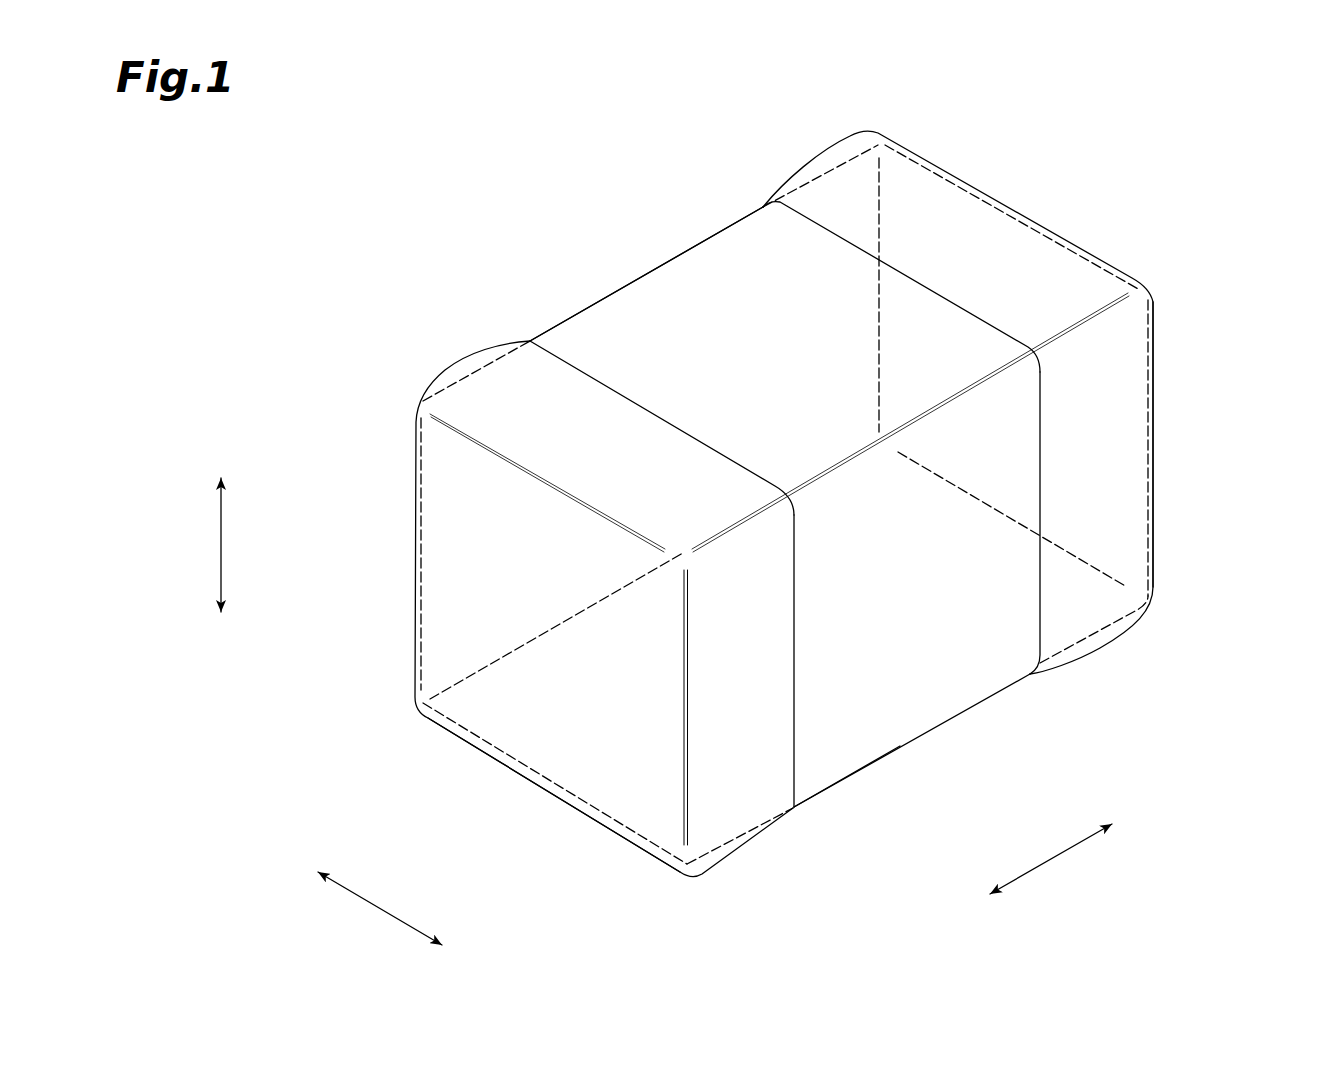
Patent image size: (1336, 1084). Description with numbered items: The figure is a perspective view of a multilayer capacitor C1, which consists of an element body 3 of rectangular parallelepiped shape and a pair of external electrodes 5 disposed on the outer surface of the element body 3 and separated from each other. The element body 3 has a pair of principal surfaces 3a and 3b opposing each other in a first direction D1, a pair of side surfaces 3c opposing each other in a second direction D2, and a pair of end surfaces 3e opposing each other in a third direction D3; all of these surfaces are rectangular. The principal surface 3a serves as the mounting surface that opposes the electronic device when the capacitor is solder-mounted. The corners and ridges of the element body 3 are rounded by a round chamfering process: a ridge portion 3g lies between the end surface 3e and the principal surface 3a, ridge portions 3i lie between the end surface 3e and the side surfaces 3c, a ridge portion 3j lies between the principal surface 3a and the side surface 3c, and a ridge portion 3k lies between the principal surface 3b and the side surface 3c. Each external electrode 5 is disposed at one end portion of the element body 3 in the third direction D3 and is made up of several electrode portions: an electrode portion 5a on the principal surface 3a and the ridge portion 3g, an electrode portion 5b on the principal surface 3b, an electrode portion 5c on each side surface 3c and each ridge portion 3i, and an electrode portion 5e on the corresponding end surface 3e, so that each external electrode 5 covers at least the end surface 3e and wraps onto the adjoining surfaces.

The multilayer capacitor C1 is at (1128, 177).
The element body 3 is at (640, 273).
The principal surface 3a is at (837, 693).
The principal surface 3b is at (740, 273).
The side surface 3c is at (623, 337).
The end surface 3e is at (543, 712).
The ridge portion 3g is at (560, 800).
The ridge portion 3i is at (882, 240).
The ridge portion 3j is at (895, 750).
The ridge portion 3k is at (610, 293).
The external electrode 5 is at (424, 395).
The electrode portion 5a is at (1127, 366).
The electrode portion 5b is at (663, 467).
The electrode portion 5c is at (753, 653).
The electrode portion 5e is at (640, 763).
The first direction D1 is at (221, 547).
The second direction D2 is at (400, 898).
The third direction D3 is at (1043, 863).